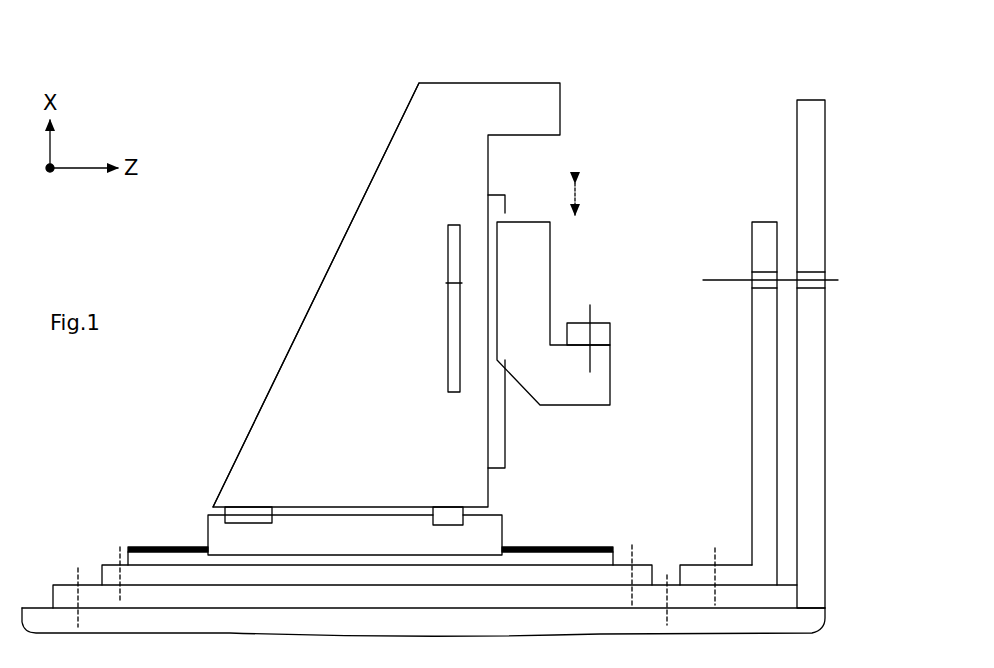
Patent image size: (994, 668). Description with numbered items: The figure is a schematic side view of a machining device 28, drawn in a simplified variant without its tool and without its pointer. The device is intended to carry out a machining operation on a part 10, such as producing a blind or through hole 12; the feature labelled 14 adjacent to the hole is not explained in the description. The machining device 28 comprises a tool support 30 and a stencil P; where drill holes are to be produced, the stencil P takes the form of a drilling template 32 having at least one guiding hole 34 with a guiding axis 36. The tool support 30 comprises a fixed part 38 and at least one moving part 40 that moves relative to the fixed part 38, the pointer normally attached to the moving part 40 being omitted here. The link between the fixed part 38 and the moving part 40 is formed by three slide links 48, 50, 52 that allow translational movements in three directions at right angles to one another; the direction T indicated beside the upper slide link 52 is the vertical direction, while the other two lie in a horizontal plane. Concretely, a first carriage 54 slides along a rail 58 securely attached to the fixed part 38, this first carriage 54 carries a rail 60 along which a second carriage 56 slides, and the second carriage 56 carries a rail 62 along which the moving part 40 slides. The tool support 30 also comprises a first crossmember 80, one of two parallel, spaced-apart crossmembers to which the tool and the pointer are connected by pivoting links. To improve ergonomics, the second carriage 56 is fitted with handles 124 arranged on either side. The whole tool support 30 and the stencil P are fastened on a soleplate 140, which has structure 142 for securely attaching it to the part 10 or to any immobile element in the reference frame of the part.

The part 10 is at (797, 135).
The blind or through hole 12 is at (799, 272).
The second surface of workpiece 14 is at (838, 280).
The machining device 28 is at (677, 66).
The tool support 30 is at (258, 233).
The drilling template 32 is at (752, 232).
The guiding hole 34 is at (752, 272).
The guiding axis 36 is at (712, 279).
The fixed part 38 is at (112, 570).
The moving part 40 is at (552, 263).
The slide link 48 is at (597, 546).
The slide link 50 is at (240, 517).
The slide link 52 is at (508, 210).
The first carriage 54 is at (200, 534).
The second carriage 56 is at (305, 372).
The rail 58 is at (152, 550).
The rail 60 is at (232, 507).
The rail 62 is at (500, 456).
The first crossmember 80 is at (612, 336).
The handles 124 is at (448, 283).
The soleplate 140 is at (53, 599).
The attaching structure 142 is at (77, 570).
The stencil P is at (770, 214).
The translational direction T is at (584, 199).